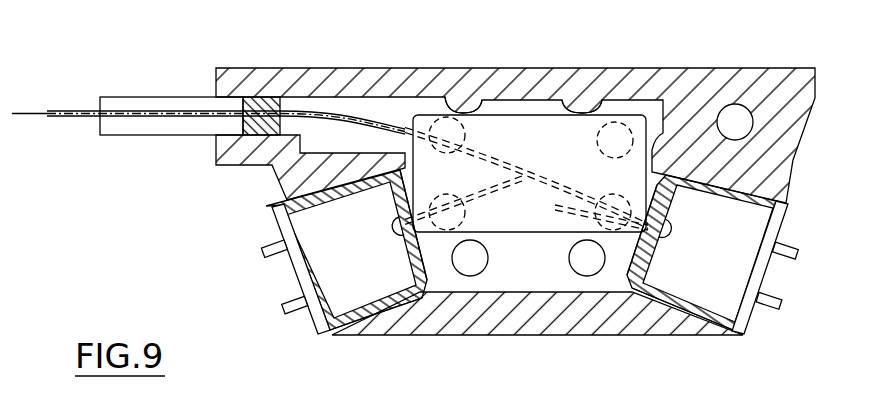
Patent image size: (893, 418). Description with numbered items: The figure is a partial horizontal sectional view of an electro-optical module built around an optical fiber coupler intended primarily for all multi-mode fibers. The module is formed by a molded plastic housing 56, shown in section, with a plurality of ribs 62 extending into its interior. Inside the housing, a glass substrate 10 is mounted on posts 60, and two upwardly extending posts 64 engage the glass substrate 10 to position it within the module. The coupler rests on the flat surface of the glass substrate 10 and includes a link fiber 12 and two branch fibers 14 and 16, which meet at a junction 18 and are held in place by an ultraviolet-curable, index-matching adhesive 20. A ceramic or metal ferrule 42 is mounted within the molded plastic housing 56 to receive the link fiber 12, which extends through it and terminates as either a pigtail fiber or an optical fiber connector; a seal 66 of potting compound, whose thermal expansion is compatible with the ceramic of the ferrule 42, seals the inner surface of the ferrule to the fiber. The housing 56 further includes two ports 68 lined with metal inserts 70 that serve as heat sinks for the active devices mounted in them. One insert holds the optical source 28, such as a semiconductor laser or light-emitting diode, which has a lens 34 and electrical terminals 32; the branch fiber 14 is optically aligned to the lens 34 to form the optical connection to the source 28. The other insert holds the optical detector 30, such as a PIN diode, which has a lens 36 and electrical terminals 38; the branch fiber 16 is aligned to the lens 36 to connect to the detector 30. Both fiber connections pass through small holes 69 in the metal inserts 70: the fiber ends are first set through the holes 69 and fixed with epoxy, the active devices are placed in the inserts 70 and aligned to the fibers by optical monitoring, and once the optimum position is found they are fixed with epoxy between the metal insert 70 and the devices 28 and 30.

The glass substrate 10 is at (507, 232).
The link fiber 12 is at (78, 110).
The branch fiber 14 is at (578, 207).
The branch fiber 16 is at (482, 192).
The junction 18 is at (543, 172).
The ultraviolet-curable adhesive 20 is at (539, 139).
The light source 28 is at (742, 294).
The light detector 30 is at (332, 234).
The terminals 32 is at (790, 250).
The lens 34 is at (668, 228).
The lens element 36 is at (400, 238).
The electrical terminal 38 is at (280, 246).
The ferrule 42 is at (162, 97).
The molded plastic housing 56 is at (680, 68).
The posts 60 is at (452, 96).
The ribs 62 is at (564, 92).
The upwardly extending posts 64 is at (489, 266).
The seal 66 is at (262, 95).
The ports 68 is at (401, 312).
The holes 69 is at (405, 297).
The metal inserts 70 is at (368, 318).